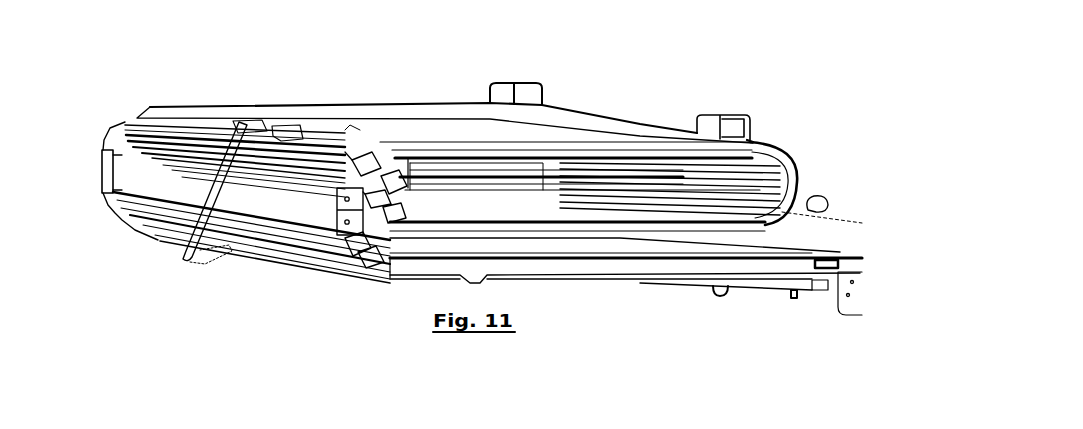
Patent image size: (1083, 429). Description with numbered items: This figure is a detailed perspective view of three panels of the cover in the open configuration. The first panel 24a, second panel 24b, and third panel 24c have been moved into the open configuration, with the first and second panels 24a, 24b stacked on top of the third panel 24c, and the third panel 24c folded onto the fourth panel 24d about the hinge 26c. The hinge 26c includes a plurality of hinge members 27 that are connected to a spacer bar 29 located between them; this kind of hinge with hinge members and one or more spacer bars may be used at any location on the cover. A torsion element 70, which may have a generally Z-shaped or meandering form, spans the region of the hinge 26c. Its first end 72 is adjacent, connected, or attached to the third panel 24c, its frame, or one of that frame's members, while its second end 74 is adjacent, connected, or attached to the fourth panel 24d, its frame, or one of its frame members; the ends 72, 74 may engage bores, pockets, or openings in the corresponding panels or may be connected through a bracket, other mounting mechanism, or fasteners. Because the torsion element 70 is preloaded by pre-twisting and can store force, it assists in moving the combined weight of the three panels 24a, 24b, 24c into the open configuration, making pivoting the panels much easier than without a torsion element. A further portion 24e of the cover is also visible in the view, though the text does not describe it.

The first panel 24a is at (641, 177).
The second panel 24b is at (533, 210).
The third panel 24c is at (443, 130).
The fourth panel 24d is at (685, 250).
The end fitting 24e is at (826, 233).
The hinge 26c is at (116, 176).
The hinge members 27 is at (199, 130).
The spacer bar 29 is at (280, 203).
The torsion element 70 is at (203, 194).
The first end 72 is at (281, 128).
The second end 74 is at (233, 249).